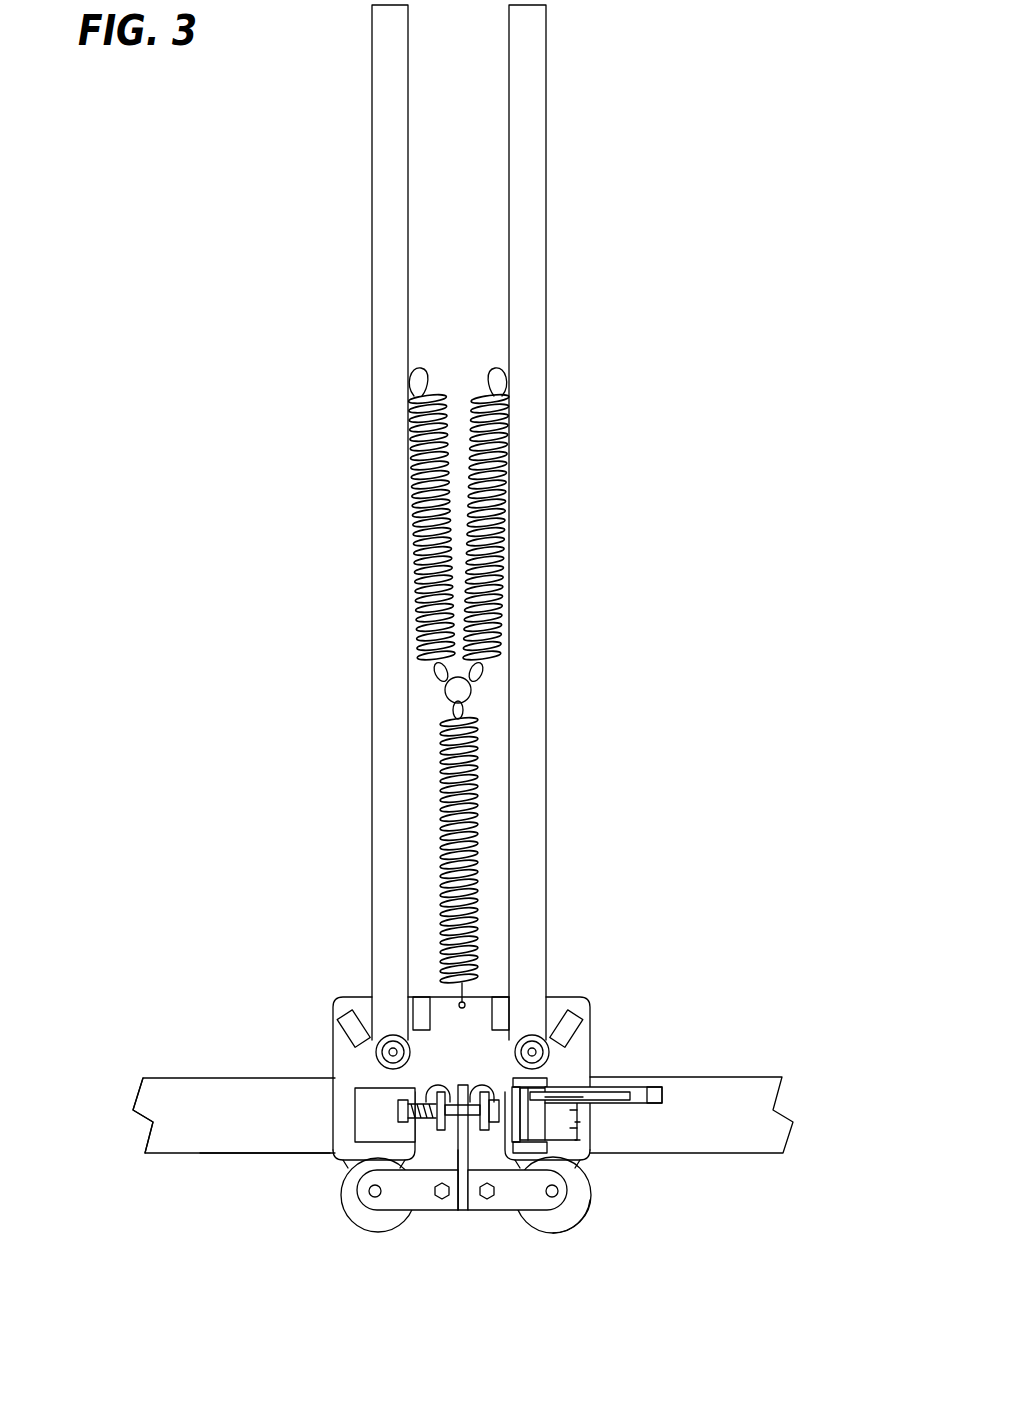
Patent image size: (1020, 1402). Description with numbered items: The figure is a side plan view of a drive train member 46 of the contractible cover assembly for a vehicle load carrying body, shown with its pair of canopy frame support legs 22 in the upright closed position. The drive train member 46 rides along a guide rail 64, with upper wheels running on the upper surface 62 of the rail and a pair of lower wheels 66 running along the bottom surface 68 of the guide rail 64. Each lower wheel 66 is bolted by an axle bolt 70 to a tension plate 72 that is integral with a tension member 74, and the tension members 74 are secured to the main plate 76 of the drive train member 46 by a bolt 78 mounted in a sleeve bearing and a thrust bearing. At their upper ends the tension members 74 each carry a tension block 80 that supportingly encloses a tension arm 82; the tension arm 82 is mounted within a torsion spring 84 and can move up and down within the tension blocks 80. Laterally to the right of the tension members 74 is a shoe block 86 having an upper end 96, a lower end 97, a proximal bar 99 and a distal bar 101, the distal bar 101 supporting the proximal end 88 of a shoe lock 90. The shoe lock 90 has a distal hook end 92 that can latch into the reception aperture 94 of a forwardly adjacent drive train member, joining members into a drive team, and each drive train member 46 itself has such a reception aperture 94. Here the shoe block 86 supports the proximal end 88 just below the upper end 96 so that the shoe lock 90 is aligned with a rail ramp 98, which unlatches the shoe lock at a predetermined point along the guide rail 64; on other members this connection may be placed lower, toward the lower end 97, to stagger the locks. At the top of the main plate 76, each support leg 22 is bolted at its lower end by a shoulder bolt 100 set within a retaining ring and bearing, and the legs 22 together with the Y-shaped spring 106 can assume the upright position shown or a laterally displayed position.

The canopy frame support legs 22 is at (385, 295).
The Y-shaped spring 106 is at (446, 412).
The drive train member 46 is at (597, 699).
The upper surface 62 is at (224, 1078).
The guide rail 64 is at (177, 1128).
The bottom surface 68 is at (250, 1153).
The main plate 76 is at (460, 1050).
The tension arm 82 is at (512, 1050).
The shoulder bolt 100 is at (393, 1052).
The tension block 80 is at (430, 1085).
The reception aperture 94 is at (370, 1103).
The torsion spring 84 is at (410, 1115).
The upper end 96 is at (520, 1095).
The rail ramp 98 is at (655, 1103).
The distal hook end 92 is at (630, 1093).
The shoe lock 90 is at (583, 1097).
The proximal end 88 is at (577, 1117).
The proximal bar 99 is at (580, 1122).
The shoe block 86 is at (575, 1128).
The distal bar 101 is at (580, 1140).
The axle bolt 70 is at (375, 1200).
The lower wheels 66 is at (362, 1220).
The tension plate 72 is at (398, 1192).
The tension member 74 is at (438, 1166).
The bolt 78 is at (440, 1200).
The lower end 97 is at (555, 1196).